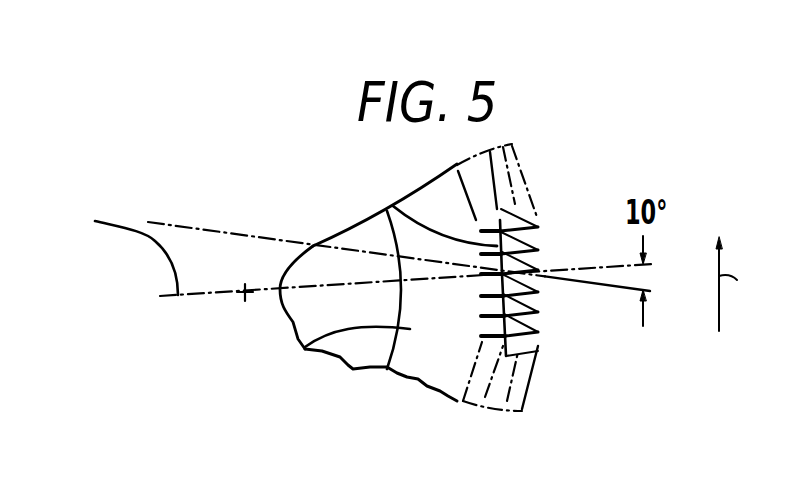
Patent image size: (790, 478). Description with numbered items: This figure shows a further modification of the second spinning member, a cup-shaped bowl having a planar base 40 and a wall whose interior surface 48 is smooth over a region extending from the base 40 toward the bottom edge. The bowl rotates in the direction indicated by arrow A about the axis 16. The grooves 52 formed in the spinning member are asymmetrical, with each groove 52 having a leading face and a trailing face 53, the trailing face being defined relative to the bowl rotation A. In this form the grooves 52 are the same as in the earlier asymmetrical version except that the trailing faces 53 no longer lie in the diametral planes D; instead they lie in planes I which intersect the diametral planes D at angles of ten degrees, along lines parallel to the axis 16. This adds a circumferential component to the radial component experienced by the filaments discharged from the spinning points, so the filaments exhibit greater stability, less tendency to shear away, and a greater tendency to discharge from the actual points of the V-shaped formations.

The axis 16 is at (247, 293).
The planar base 40 is at (305, 349).
The interior surface 48 is at (393, 210).
The grooves 52 is at (536, 273).
The trailing faces 53 is at (531, 287).
The diametral planes D is at (364, 246).
The planes I is at (208, 231).
The arrow indicating bowl rotation A is at (731, 284).